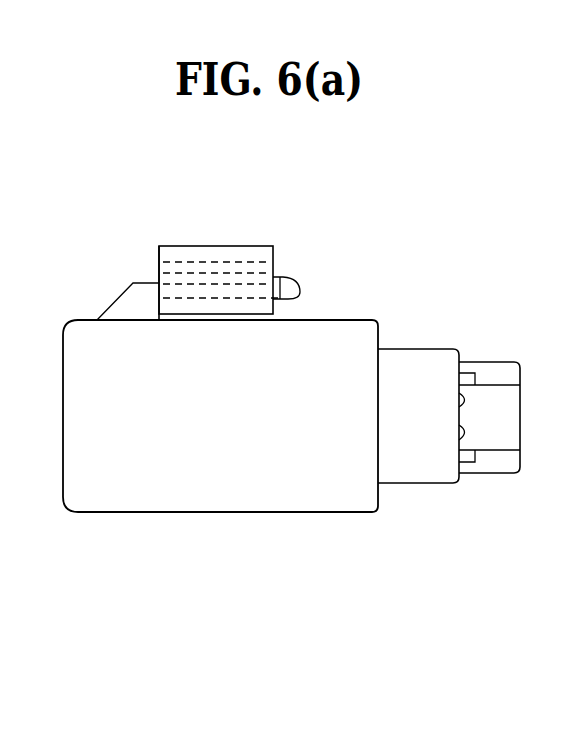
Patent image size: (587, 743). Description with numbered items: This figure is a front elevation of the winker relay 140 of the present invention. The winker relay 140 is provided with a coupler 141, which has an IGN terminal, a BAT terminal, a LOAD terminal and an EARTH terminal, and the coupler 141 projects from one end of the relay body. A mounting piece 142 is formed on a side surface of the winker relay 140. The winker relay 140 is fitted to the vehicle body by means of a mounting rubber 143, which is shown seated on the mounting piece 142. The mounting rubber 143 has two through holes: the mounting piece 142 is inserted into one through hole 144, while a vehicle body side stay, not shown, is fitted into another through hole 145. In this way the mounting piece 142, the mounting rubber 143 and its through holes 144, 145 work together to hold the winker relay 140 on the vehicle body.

The winker relay 140 is at (215, 480).
The coupler 141 is at (497, 373).
The mounting piece 142 is at (148, 283).
The mounting rubber 143 is at (258, 247).
The through hole 144 is at (187, 296).
The through hole 145 is at (212, 268).